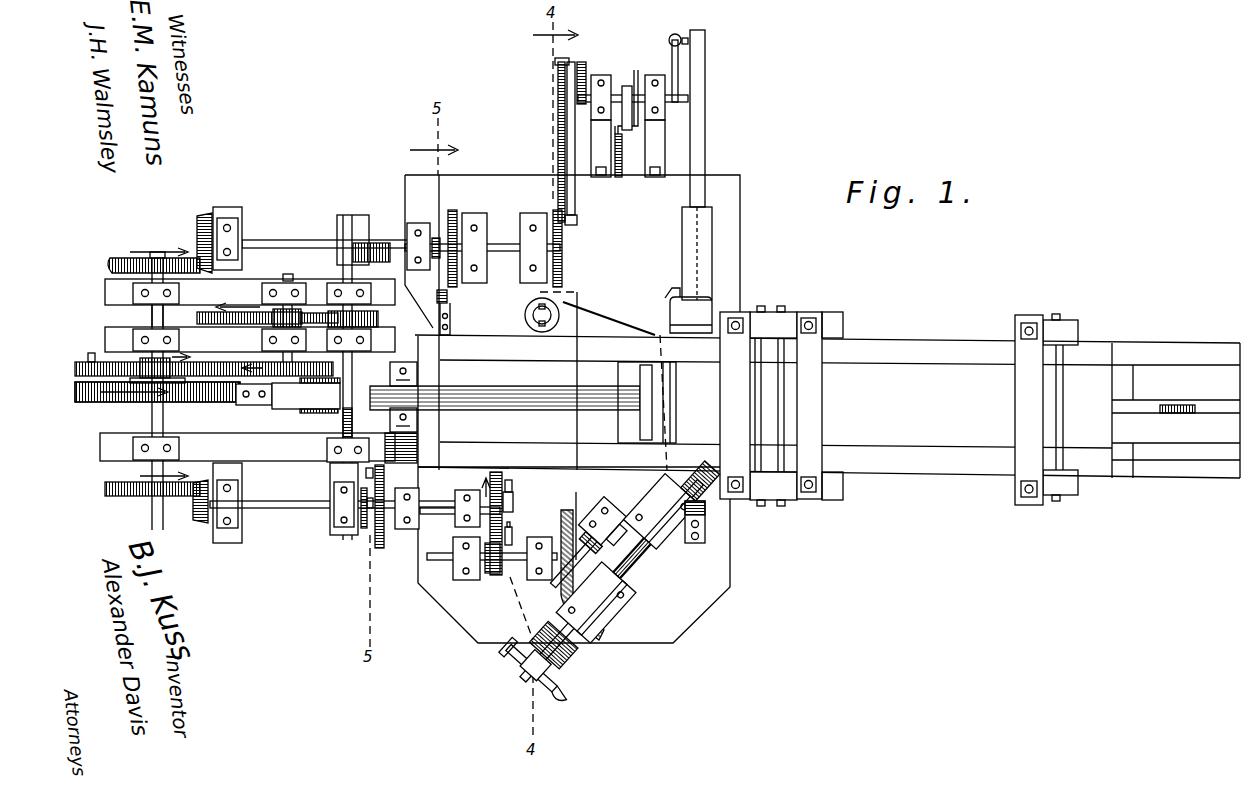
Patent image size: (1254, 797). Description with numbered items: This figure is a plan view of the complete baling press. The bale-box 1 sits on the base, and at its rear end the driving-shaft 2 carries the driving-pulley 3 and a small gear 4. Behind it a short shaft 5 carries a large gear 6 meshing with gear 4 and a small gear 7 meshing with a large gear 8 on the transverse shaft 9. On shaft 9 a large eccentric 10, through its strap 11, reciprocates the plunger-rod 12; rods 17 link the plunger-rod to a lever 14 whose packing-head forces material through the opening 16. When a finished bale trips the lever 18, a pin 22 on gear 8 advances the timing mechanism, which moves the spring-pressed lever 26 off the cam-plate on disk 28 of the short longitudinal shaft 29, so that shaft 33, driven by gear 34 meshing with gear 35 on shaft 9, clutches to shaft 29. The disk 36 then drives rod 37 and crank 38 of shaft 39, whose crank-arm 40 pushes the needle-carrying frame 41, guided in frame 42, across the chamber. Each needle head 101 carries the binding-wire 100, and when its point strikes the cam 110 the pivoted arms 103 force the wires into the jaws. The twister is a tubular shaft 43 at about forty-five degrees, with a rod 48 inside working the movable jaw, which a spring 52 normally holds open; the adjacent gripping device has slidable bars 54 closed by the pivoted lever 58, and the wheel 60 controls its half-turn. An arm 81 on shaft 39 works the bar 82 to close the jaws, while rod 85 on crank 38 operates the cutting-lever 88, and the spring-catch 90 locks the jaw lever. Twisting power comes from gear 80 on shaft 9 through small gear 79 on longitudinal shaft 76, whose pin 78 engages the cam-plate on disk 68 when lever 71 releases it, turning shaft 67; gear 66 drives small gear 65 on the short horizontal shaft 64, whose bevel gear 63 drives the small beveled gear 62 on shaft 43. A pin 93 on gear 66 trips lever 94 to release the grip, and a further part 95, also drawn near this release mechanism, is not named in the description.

The bale-box 1 is at (935, 412).
The driving-shaft 2 is at (347, 243).
The driving-pulley 3 is at (323, 242).
The small gear 4 is at (378, 318).
The short shaft 5 is at (290, 274).
The large gear 6 is at (215, 325).
The small gear 7 is at (258, 360).
The large gear 8 is at (76, 371).
The transverse shaft 9 is at (150, 316).
The eccentric 10 is at (106, 404).
The strap 11 is at (78, 395).
The plunger-rod 12 is at (244, 405).
The lever 14 is at (478, 392).
The opening 16 is at (628, 431).
The rods 17 is at (270, 430).
The lever 18 is at (1180, 404).
The pin 22 is at (90, 355).
The spring-pressed pivoted lever 26 is at (448, 297).
The disk 28 is at (453, 216).
The short longitudinal shaft 29 is at (490, 246).
The shaft 33 is at (266, 240).
The gear 34 is at (198, 220).
The gear 35 is at (122, 261).
The disk 36 is at (562, 276).
The rod 37 is at (572, 196).
The crank 38 is at (584, 72).
The shaft 39 is at (692, 98).
The crank-arm 40 is at (669, 58).
The needle-carrying frame 41 is at (705, 165).
The frame 42 is at (706, 243).
The tubular shaft 43 is at (648, 553).
The rod 48 is at (576, 660).
The spring 52 is at (622, 642).
The slidable bars 54 is at (652, 482).
The pivoted lever 58 is at (604, 602).
The wheel 60 is at (622, 518).
The small beveled gear 62 is at (586, 645).
The gear 63 is at (572, 517).
The short horizontal shaft 64 is at (508, 565).
The small gear 65 is at (487, 574).
The gear 66 is at (497, 474).
The short longitudinal shaft 67 is at (437, 507).
The disk 68 is at (382, 550).
The pivoted lever 71 is at (417, 446).
The longitudinal shaft 76 is at (284, 498).
The pin 78 is at (364, 532).
The small gear 79 is at (194, 512).
The large gear 80 is at (116, 497).
The arm 81 is at (631, 130).
The bar 82 is at (620, 172).
The rod 85 is at (558, 150).
The cutting-lever 88 is at (682, 480).
The spring-catch 90 is at (536, 660).
The pin 93 is at (515, 493).
The lever 94 is at (510, 480).
The pawl 95 is at (512, 528).
The binding-wire 100 is at (626, 327).
The head 101 is at (691, 315).
The pivoted arm 103 is at (672, 302).
The cam 110 is at (706, 511).